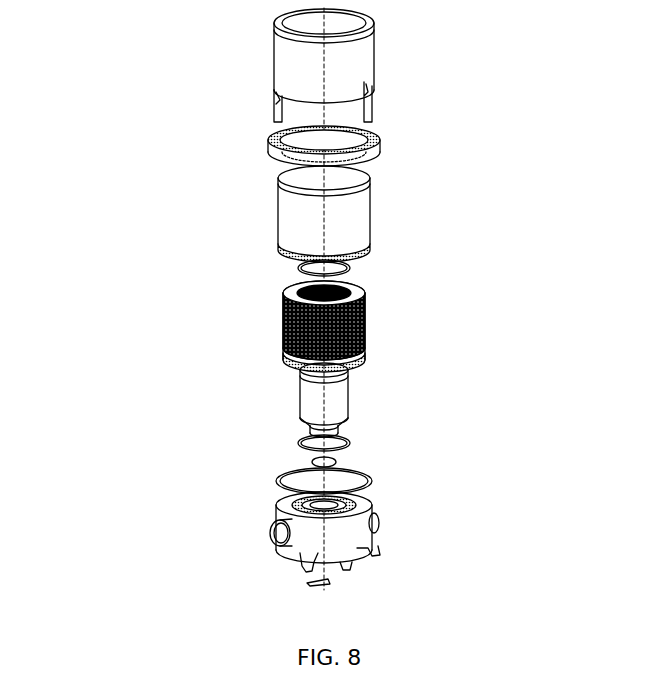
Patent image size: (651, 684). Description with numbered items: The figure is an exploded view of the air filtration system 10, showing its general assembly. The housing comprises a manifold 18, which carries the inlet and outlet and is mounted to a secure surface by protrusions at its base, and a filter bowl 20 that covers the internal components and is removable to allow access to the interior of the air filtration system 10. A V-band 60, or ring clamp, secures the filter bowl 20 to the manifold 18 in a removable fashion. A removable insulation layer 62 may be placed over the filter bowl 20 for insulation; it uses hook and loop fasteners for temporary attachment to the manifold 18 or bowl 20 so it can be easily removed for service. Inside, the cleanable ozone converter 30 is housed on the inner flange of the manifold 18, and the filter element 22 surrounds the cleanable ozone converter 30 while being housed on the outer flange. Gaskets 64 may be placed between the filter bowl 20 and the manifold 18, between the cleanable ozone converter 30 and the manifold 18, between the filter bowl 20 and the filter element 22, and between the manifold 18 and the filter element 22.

The air filtration system 10 is at (140, 446).
The manifold 18 is at (278, 518).
The filter bowl 20 is at (293, 222).
The filter element 22 is at (286, 333).
The cleanable ozone converter 30 is at (303, 397).
The V-band 60 is at (283, 148).
The removable insulation layer 62 is at (283, 70).
The gaskets 64 is at (345, 268).